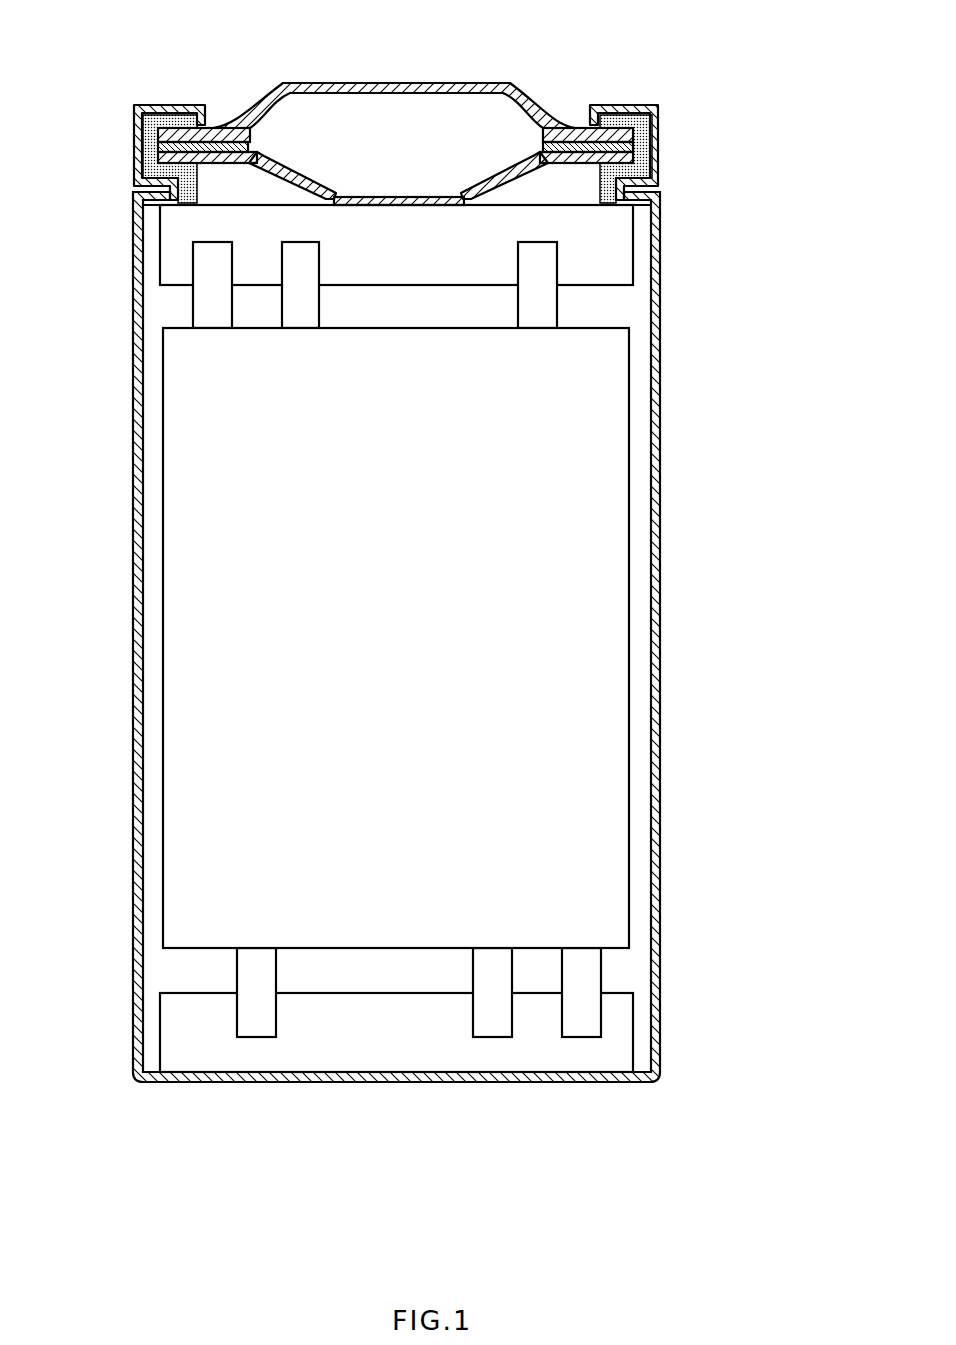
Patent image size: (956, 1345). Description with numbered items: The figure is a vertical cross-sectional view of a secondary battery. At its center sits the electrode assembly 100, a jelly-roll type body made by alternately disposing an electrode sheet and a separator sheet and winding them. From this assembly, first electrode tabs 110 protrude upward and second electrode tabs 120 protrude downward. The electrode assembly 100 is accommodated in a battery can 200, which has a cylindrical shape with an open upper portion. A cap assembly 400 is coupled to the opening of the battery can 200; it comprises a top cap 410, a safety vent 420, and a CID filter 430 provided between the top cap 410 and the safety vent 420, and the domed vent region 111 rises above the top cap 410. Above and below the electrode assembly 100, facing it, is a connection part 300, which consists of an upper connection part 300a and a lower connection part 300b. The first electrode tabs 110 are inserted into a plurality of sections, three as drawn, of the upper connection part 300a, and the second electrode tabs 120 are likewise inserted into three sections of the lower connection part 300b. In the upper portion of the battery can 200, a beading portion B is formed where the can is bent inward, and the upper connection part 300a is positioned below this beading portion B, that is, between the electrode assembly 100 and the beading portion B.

The electrode assembly 100 is at (610, 553).
The first electrode tab 110 is at (214, 305).
The cap plate dome / vent 111 is at (527, 90).
The second electrode tab 120 is at (258, 1023).
The battery can 200 is at (655, 658).
The connection part 300 is at (489, 708).
The upper connection part 300a is at (615, 246).
The lower connection part 300b is at (618, 1037).
The cap assembly 400 is at (474, 158).
The top cap 410 is at (632, 136).
The safety vent 420 is at (633, 160).
The CID filter 430 is at (632, 148).
The beading portion B is at (624, 191).